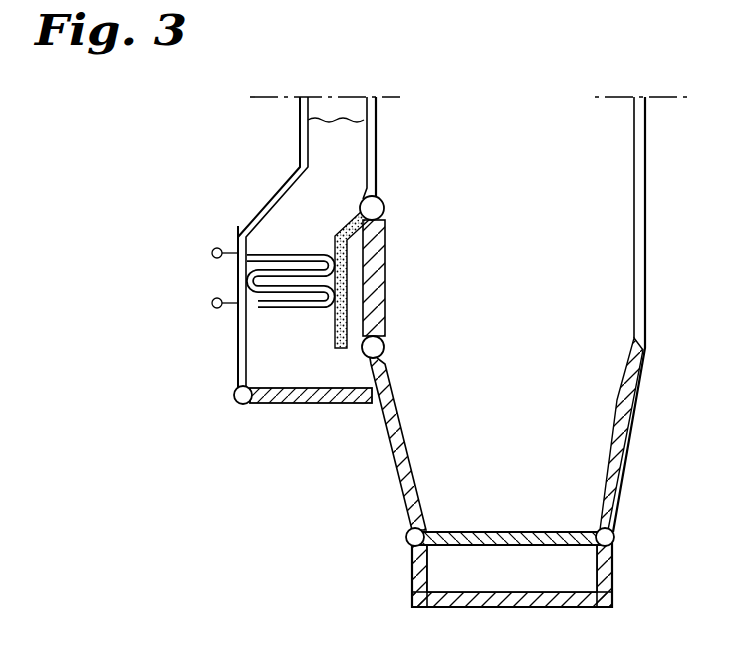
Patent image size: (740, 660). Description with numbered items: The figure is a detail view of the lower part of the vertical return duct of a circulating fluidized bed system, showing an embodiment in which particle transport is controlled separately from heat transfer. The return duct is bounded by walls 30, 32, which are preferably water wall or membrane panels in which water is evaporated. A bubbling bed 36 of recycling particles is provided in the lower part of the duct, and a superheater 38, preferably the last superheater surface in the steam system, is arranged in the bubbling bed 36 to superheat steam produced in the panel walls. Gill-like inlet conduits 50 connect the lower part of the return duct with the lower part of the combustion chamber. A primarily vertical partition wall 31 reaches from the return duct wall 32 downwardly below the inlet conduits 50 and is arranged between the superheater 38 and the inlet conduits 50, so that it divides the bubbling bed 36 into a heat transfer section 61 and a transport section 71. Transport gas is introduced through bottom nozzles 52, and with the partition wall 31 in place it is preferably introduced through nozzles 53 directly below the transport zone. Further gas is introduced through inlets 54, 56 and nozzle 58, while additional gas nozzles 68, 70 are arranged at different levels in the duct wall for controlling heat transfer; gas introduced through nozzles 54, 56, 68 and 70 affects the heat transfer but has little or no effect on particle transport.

The return duct wall 30 is at (300, 146).
The partition wall 31 is at (335, 233).
The return duct wall 32 is at (378, 166).
The bubbling bed 36 is at (325, 360).
The superheater 38 is at (245, 385).
The inlet conduits 50 is at (386, 226).
The bottom nozzles 52 is at (288, 405).
The nozzles 53 is at (384, 412).
The inlet 54 is at (238, 373).
The inlet 56 is at (238, 350).
The nozzle 58 is at (238, 232).
The heat transfer section 61 is at (386, 280).
The gas nozzle 68 is at (238, 317).
The gas nozzle 70 is at (238, 270).
The transport section 71 is at (234, 398).